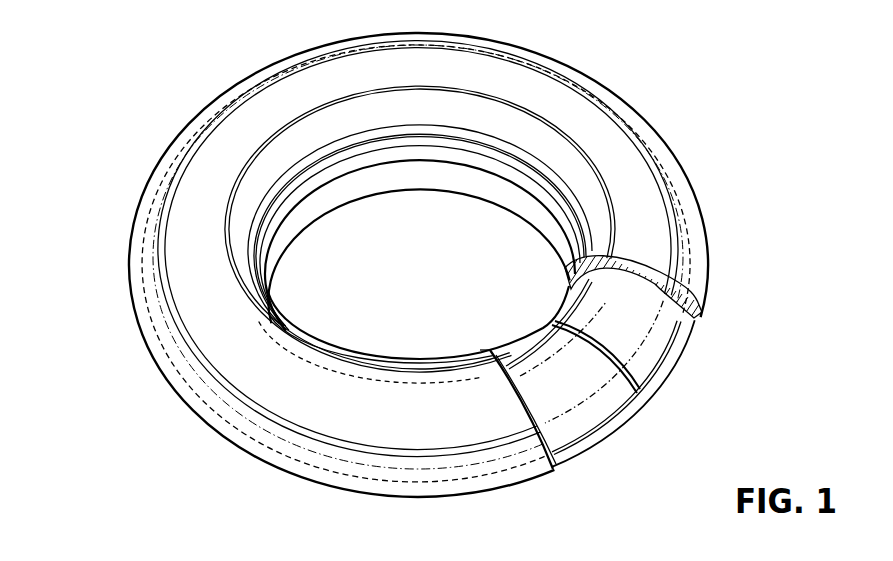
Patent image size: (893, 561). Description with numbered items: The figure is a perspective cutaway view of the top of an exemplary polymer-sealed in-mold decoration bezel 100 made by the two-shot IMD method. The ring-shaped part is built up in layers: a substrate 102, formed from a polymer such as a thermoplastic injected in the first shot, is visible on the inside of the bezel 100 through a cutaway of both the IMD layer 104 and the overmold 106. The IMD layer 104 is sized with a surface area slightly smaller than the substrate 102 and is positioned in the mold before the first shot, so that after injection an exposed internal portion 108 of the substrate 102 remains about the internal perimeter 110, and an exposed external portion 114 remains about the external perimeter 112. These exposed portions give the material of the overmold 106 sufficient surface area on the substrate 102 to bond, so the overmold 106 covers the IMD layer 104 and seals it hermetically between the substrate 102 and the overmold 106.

The bezel 100 is at (732, 62).
The substrate 102 is at (566, 406).
The IMD layer 104 is at (646, 328).
The overmold 106 is at (653, 177).
The exposed internal portion 108 is at (543, 328).
The internal perimeter 110 is at (558, 246).
The external perimeter 112 is at (135, 265).
The exposed external portion 114 is at (623, 403).